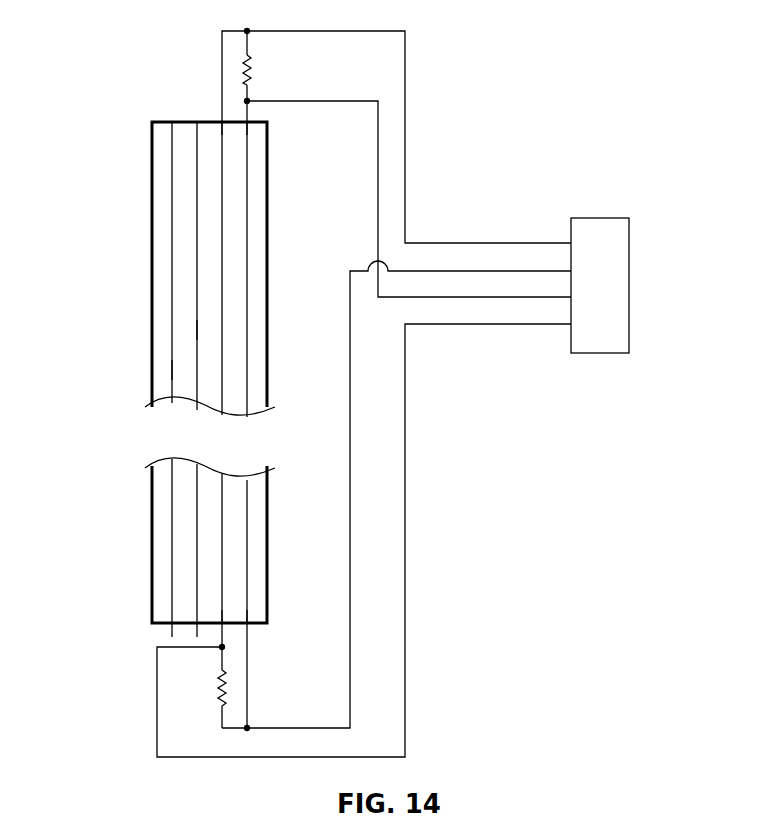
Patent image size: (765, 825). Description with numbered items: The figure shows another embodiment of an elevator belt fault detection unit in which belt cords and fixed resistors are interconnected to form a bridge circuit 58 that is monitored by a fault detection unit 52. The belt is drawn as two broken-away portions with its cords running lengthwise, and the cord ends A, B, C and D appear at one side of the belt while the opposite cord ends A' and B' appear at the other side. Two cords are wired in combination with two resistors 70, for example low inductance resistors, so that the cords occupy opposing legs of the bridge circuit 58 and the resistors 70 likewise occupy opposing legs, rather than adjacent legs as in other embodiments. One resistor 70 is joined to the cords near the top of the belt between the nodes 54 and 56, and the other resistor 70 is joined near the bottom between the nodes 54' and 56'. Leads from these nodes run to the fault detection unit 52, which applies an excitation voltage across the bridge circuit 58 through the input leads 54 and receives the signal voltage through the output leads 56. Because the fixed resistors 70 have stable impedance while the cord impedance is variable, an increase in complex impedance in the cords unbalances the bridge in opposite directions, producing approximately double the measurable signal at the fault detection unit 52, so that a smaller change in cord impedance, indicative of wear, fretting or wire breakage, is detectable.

The fault detection unit 52 is at (613, 218).
The input leads 54 is at (274, 44).
The output lead 56 is at (274, 100).
The first node of second electrode 54' is at (277, 742).
The second node of second electrode 56' is at (193, 661).
The bridge circuit 58 is at (102, 602).
The fixed resistor 70 is at (243, 70).
The cord end A is at (277, 193).
The cord end B is at (229, 195).
The cord end C is at (197, 330).
The cord end D is at (172, 372).
The cord end A' is at (279, 635).
The cord end B' is at (268, 602).